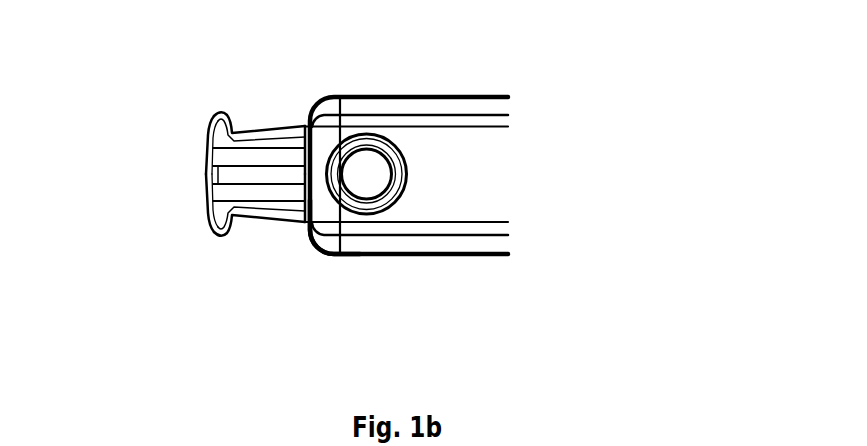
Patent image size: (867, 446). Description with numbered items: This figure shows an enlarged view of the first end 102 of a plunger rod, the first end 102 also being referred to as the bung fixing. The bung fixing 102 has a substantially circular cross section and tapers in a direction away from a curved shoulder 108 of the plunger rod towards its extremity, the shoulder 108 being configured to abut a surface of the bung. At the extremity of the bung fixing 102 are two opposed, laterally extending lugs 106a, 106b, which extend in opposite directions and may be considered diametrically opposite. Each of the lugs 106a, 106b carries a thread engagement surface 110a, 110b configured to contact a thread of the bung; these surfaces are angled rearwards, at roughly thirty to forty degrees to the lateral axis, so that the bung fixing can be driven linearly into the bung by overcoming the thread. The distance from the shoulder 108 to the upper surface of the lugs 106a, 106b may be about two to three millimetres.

The first end 102 is at (293, 126).
The shoulder 108 is at (327, 253).
The thread engagement surface 110a is at (207, 223).
The thread engagement surface 110b is at (207, 126).
The lug 106a is at (222, 238).
The lug 106b is at (228, 119).